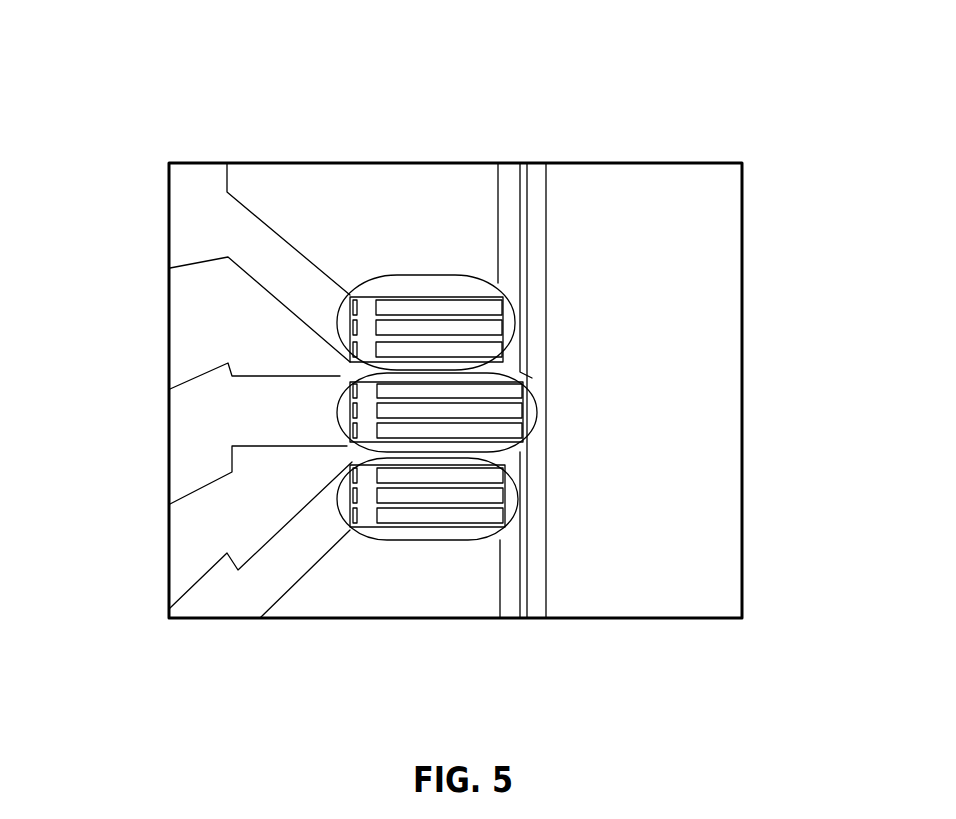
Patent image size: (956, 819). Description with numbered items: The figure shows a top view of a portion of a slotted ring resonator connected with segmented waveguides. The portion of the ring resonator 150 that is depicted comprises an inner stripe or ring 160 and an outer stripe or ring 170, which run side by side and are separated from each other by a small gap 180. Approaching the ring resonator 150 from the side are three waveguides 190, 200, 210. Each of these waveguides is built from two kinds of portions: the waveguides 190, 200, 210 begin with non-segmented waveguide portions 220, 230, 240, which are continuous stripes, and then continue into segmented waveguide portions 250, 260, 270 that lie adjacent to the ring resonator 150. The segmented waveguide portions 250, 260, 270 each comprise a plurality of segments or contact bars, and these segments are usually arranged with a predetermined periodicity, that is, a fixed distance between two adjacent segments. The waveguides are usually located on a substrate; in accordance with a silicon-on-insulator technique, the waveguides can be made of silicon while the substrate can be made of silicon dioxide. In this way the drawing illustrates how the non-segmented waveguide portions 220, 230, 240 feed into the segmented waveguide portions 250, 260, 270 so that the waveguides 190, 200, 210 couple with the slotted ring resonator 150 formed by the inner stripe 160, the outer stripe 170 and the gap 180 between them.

The ring resonator 150 is at (566, 260).
The inner stripe or ring 160 is at (535, 177).
The outer stripe or ring 170 is at (510, 177).
The gap 180 is at (530, 577).
The waveguide 190 is at (308, 246).
The waveguide 200 is at (208, 360).
The waveguide 210 is at (203, 564).
The non-segmented waveguide portion 220 is at (187, 203).
The non-segmented waveguide portion 230 is at (177, 462).
The non-segmented waveguide portion 240 is at (238, 598).
The segmented waveguide portion 250 is at (412, 275).
The segmented waveguide portion 260 is at (537, 385).
The segmented waveguide portion 270 is at (428, 540).